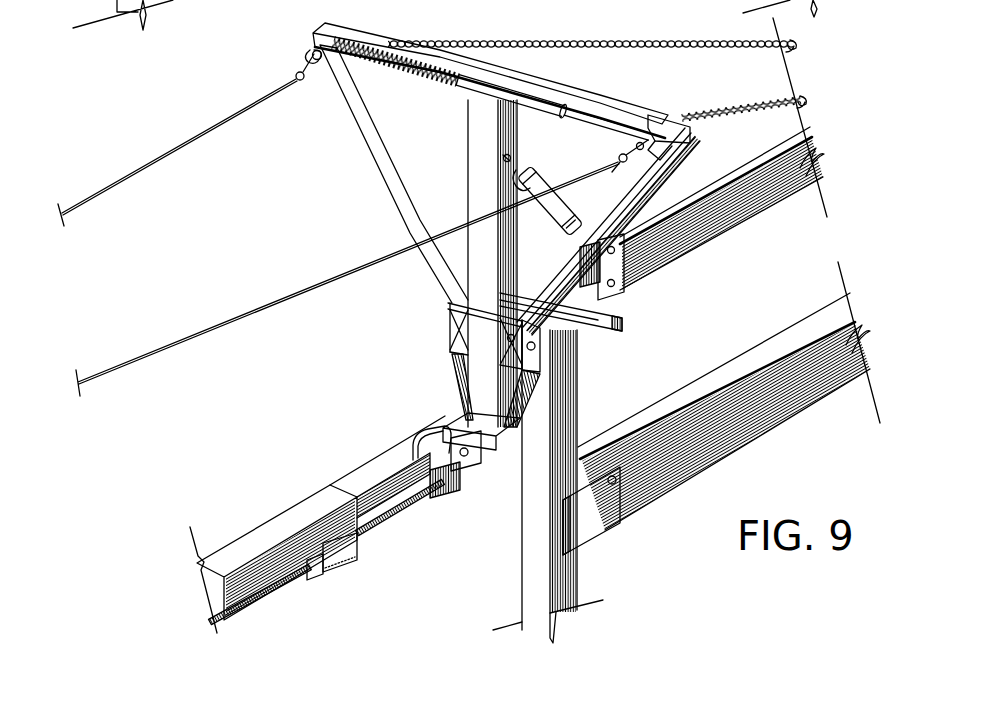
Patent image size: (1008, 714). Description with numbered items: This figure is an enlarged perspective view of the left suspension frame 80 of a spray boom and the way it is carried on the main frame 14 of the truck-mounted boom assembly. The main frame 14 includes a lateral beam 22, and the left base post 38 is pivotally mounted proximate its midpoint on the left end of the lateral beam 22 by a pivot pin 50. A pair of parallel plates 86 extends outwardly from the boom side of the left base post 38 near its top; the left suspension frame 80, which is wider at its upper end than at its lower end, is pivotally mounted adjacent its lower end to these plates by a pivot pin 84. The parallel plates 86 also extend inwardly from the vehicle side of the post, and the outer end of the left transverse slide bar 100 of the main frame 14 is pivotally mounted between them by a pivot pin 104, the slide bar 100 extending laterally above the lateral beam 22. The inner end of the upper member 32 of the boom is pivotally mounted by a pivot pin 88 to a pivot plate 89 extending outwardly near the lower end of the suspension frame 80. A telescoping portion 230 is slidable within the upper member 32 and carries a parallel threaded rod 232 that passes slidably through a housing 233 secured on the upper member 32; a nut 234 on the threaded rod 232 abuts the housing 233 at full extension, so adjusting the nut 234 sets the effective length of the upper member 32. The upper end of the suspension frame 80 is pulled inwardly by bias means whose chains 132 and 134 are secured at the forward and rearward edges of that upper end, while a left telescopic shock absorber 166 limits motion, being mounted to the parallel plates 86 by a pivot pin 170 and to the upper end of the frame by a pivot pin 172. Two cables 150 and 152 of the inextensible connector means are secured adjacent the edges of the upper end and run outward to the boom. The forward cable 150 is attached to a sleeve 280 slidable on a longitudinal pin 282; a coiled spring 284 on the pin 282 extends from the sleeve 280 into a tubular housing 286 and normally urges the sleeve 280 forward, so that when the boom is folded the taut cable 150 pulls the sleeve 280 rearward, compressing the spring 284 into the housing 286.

The main frame 14 is at (753, 445).
The lateral beam 22 is at (795, 400).
The upper member 32 is at (266, 512).
The left base post 38 is at (530, 553).
The pivot pin 50 is at (620, 483).
The left suspension frame 80 is at (450, 284).
The pivot pin 84 is at (540, 346).
The parallel plates 86 is at (523, 300).
The pivot pin 88 is at (478, 457).
The pivot plate 89 is at (468, 423).
The left transverse slide bar 100 is at (745, 210).
The pivot pin 104 is at (616, 284).
The chain 132 is at (612, 42).
The chain 134 is at (702, 110).
The cable 150 is at (195, 143).
The cable 152 is at (208, 320).
The left shock absorber 166 is at (533, 176).
The pivot pin 170 is at (613, 240).
The pivot pin 172 is at (503, 158).
The telescoping portion 230 is at (357, 455).
The threaded rod 232 is at (388, 523).
The housing 233 is at (338, 555).
The nut 234 is at (312, 580).
The sleeve 280 is at (316, 50).
The longitudinal pin 282 is at (592, 116).
The coiled spring 284 is at (380, 70).
The tubular housing 286 is at (517, 92).